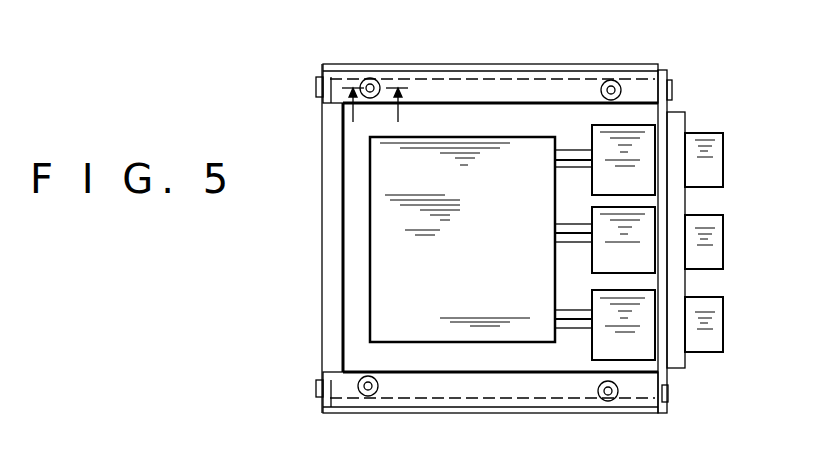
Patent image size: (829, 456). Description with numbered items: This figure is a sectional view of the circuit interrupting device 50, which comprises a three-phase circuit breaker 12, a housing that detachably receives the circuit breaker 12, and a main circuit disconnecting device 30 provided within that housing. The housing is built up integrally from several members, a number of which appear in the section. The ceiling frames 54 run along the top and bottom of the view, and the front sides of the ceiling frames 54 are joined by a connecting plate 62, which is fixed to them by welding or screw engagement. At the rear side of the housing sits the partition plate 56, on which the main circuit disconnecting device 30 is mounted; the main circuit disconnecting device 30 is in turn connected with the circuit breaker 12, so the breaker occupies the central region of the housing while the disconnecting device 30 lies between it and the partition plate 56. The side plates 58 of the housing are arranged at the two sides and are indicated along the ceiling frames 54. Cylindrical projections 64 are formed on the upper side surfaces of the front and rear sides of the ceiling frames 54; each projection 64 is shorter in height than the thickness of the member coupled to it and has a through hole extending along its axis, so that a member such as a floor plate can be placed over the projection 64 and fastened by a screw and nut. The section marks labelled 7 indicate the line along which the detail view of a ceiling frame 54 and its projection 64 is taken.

The circuit interrupting device 50 is at (505, 66).
The ceiling frames 54 is at (430, 99).
The side plates 58 is at (553, 68).
The cylindrical projections 64 is at (367, 78).
The connecting plate 62 is at (332, 190).
The circuit breaker 12 is at (370, 245).
The main circuit disconnecting device 30 is at (597, 144).
The partition plate 56 is at (668, 157).
The section line 7 is at (377, 112).